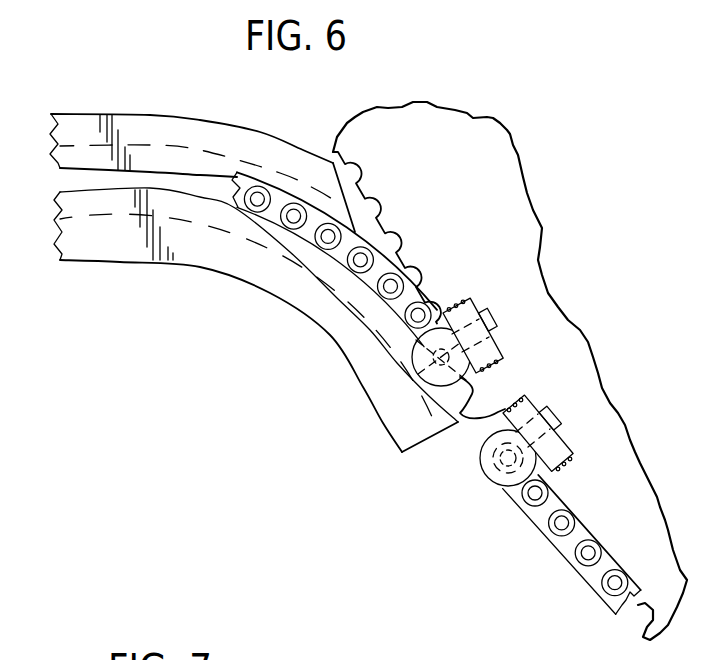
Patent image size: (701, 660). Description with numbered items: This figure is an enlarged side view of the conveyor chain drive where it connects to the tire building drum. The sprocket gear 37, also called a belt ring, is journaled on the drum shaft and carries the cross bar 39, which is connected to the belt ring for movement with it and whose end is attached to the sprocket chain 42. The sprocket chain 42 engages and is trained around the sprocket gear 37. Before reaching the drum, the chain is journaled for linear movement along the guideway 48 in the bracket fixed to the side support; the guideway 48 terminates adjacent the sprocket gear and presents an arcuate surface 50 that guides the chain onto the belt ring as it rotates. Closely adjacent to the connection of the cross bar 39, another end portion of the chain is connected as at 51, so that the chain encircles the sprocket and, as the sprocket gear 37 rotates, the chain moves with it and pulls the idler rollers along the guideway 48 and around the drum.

The sprocket gear 37 is at (510, 193).
The cross bar 39 is at (501, 351).
The sprocket chain 42 is at (304, 234).
The guideway 48 is at (152, 176).
The arcuate surface 50 is at (347, 306).
The chain end connection 51 is at (572, 481).